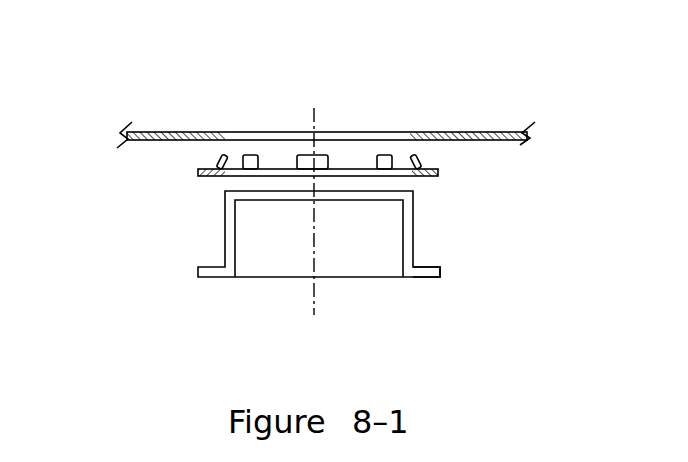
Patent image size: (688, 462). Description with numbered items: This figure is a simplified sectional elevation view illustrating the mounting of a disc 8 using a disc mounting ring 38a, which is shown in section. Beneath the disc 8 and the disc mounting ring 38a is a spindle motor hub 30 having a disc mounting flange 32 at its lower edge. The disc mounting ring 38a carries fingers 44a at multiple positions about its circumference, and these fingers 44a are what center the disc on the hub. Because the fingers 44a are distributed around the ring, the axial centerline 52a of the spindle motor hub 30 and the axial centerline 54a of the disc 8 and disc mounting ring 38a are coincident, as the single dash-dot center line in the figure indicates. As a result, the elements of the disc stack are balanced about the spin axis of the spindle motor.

The disc 8 is at (185, 132).
The axial centerline of the spindle motor hub 52a is at (315, 118).
The axial centerline of the disc and disc mounting ring 54a is at (317, 162).
The disc mounting ring 38a is at (197, 173).
The fingers 44a is at (418, 161).
The spindle motor hub 30 is at (232, 238).
The disc mounting flange 32 is at (422, 272).